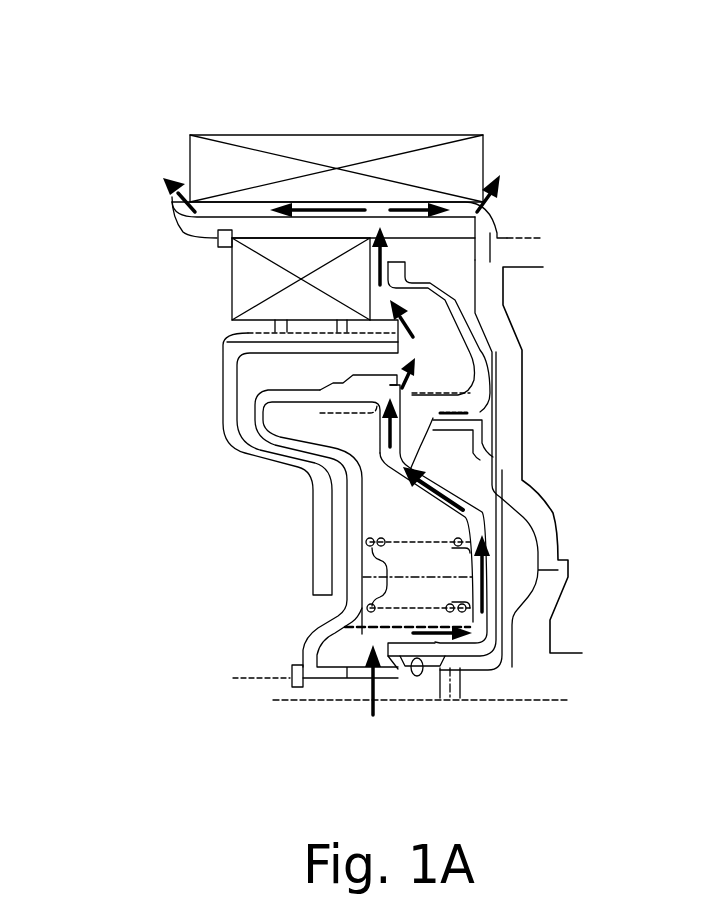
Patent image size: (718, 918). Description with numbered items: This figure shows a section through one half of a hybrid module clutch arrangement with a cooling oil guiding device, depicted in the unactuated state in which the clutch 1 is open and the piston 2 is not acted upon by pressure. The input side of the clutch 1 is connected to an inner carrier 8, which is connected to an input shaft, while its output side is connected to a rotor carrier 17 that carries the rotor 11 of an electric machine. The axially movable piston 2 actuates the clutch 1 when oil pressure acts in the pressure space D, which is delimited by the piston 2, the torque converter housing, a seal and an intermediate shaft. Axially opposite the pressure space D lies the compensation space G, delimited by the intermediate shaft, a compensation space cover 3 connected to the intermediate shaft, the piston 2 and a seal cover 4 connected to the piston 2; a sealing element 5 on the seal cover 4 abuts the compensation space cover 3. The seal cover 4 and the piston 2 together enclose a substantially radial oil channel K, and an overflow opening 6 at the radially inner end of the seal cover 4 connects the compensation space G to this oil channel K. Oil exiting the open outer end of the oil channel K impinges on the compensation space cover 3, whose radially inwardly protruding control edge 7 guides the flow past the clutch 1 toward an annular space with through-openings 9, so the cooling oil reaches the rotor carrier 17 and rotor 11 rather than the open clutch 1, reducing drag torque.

The clutch 1 is at (257, 280).
The rotor 11 is at (462, 163).
The rotor carrier 17 is at (417, 230).
The piston 2 is at (477, 370).
The inner carrier 8 is at (227, 360).
The through-openings 9 is at (340, 373).
The sealing element 5 is at (335, 403).
The compensation space cover 3 is at (345, 472).
The control edge 7 is at (397, 376).
The oil channel K is at (478, 479).
The compensation space G is at (392, 510).
The seal cover 4 is at (478, 529).
The pressure space D is at (517, 578).
The overflow opening 6 is at (476, 645).